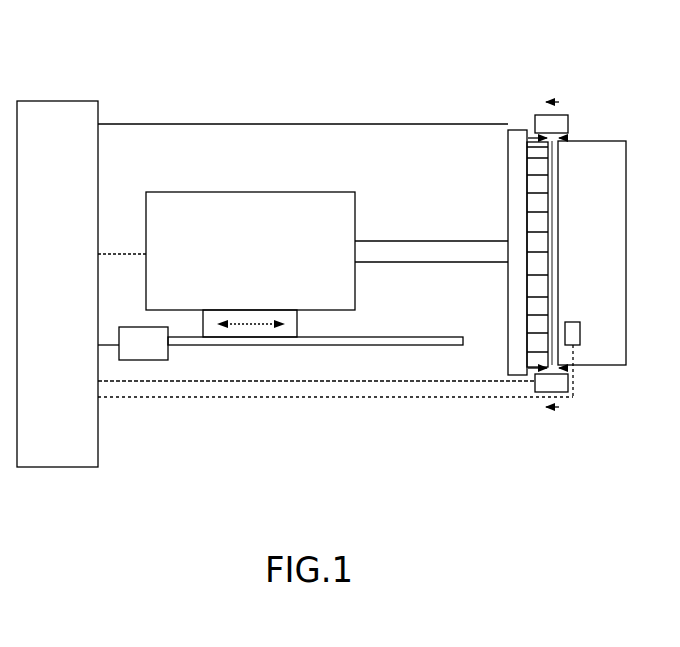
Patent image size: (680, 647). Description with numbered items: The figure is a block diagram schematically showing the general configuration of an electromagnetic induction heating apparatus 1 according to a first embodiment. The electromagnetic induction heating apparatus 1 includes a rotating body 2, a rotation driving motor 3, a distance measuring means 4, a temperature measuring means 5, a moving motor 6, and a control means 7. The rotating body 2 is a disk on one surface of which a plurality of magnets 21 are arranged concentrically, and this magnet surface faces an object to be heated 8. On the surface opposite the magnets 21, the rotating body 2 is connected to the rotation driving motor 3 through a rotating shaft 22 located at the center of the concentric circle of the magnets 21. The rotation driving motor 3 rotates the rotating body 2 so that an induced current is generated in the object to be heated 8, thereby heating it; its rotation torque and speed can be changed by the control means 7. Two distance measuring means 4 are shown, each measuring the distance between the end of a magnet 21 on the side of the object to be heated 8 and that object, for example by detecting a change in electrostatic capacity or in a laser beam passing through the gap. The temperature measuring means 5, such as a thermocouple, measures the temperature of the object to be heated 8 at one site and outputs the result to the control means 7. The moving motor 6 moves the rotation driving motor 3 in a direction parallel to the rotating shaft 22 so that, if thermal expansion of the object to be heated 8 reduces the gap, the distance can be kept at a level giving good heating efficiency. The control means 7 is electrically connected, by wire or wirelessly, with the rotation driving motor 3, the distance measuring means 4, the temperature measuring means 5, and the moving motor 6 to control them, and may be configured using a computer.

The electromagnetic induction heating apparatus 1 is at (325, 56).
The rotating body 2 is at (508, 183).
The magnet 21 is at (540, 268).
The rotating shaft 22 is at (415, 241).
The rotation driving motor 3 is at (241, 192).
The distance measuring means 4 is at (537, 114).
The temperature measuring means 5 is at (583, 333).
The moving motor 6 is at (147, 327).
The control means 7 is at (60, 101).
The object to be heated 8 is at (600, 141).